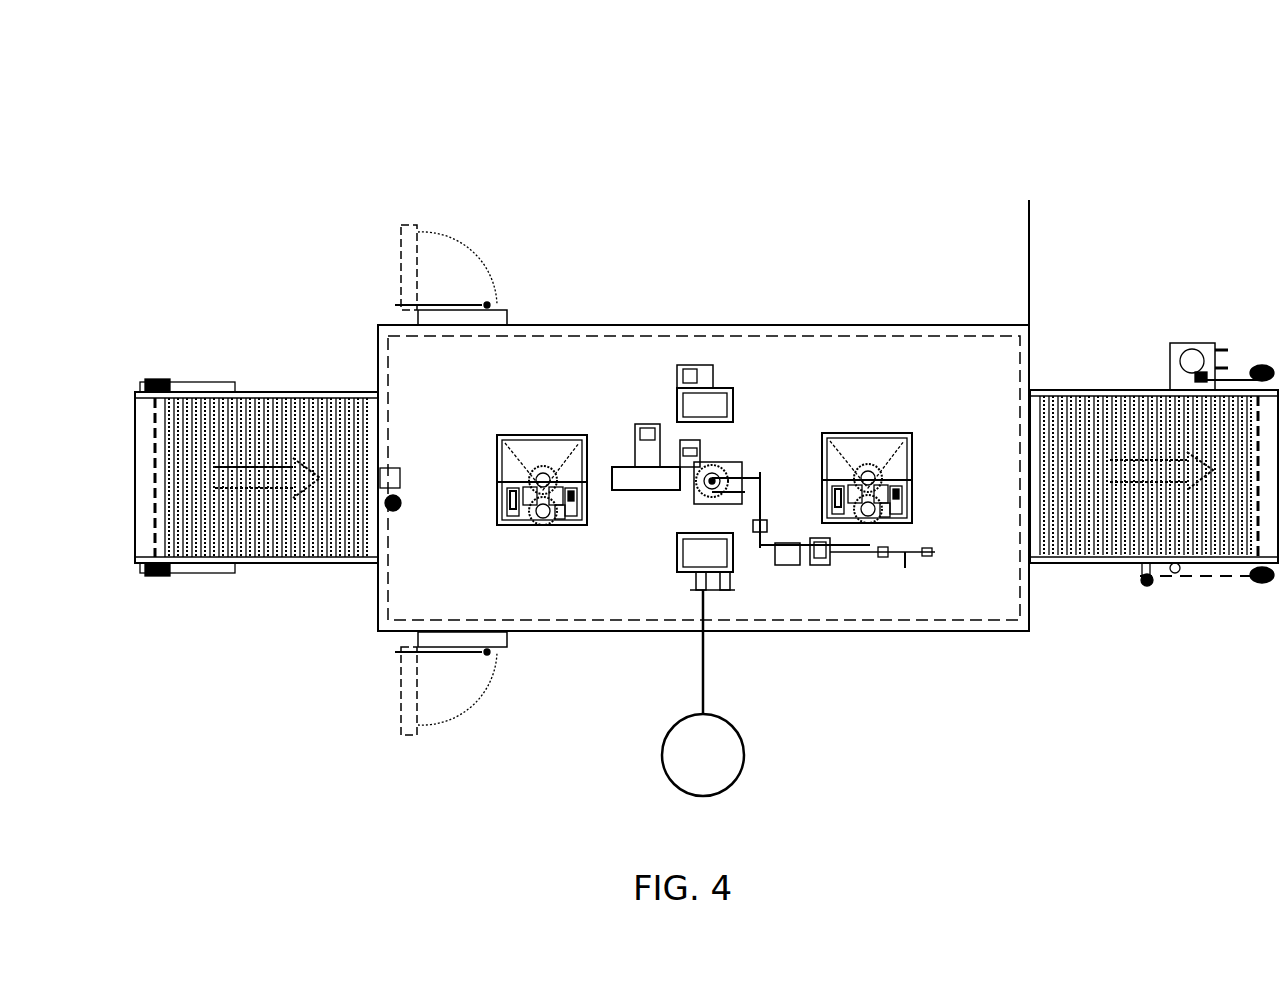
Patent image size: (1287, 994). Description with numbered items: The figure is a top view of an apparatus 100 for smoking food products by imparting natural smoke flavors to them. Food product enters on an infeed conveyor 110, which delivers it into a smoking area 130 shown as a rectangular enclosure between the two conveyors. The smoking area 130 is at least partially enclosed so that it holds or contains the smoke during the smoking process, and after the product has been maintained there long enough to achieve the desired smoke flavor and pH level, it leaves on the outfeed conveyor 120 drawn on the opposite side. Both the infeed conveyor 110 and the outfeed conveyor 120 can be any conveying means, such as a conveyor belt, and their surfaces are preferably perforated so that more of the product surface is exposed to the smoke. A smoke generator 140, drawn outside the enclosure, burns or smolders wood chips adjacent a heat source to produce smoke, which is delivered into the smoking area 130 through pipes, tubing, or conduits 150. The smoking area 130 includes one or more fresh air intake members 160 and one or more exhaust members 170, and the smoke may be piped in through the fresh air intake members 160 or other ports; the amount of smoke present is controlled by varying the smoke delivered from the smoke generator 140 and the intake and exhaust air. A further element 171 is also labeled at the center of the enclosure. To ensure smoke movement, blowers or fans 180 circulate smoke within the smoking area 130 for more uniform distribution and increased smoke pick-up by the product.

The apparatus 100 is at (851, 140).
The infeed member (conveyor) 110 is at (294, 546).
The outfeed member (conveyor) 120 is at (1118, 368).
The smoking area 130 is at (612, 312).
The smoke generator 140 is at (760, 758).
The pipes, tubing, or conduits 150 is at (720, 676).
The fresh air intake member 160 is at (693, 592).
The exhaust member 170 is at (733, 364).
The gripper assembly 171 is at (730, 440).
The blower (fan) 180 is at (538, 415).